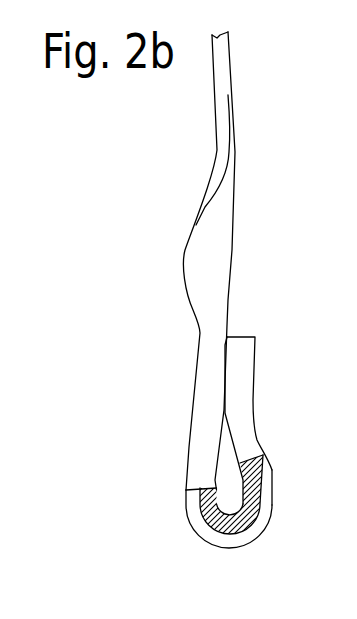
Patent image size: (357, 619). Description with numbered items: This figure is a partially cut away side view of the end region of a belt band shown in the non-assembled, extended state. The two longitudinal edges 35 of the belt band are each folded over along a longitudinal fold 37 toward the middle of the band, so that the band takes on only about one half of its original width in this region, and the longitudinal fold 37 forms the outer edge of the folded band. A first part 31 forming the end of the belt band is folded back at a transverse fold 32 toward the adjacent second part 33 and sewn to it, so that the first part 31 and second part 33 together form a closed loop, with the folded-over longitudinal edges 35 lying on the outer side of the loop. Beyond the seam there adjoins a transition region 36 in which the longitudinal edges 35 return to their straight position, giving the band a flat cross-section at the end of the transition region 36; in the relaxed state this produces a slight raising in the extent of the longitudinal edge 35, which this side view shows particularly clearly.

The first part 31 is at (279, 472).
The transverse fold 32 is at (239, 558).
The second part 33 is at (182, 454).
The longitudinal edges 35 is at (222, 64).
The transition region 36 is at (208, 262).
The longitudinal fold 37 is at (215, 378).